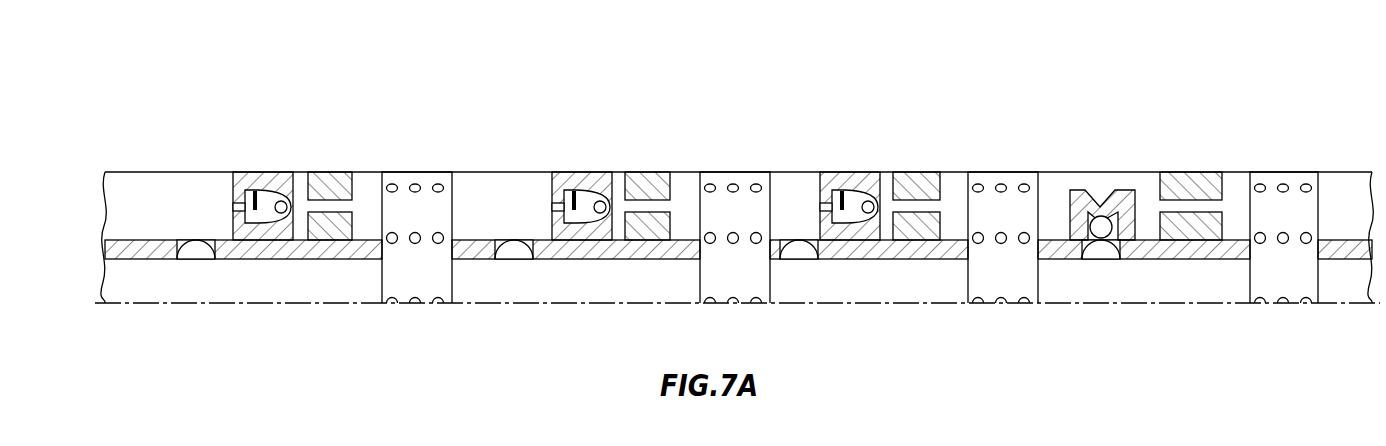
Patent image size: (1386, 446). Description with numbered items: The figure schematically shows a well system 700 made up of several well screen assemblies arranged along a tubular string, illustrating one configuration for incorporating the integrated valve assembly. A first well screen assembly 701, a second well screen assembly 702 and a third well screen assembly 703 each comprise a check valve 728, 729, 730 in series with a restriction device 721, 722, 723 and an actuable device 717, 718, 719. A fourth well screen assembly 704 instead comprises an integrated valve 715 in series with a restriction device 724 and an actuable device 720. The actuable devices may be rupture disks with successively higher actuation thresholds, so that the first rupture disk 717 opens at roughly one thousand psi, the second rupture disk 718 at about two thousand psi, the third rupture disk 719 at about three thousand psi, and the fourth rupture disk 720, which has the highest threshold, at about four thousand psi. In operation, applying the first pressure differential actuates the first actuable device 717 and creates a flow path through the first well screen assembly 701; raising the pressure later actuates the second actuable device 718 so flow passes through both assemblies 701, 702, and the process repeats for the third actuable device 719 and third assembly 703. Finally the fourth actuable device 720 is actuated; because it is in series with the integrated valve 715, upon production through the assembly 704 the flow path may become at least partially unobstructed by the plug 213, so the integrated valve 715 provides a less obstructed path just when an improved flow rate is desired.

The well system 700 is at (156, 128).
The first well screen assembly 701 is at (368, 156).
The second well screen assembly 702 is at (694, 156).
The third well screen assembly 703 is at (961, 157).
The well screen assembly 704 is at (1240, 157).
The integrated valve 715 is at (1077, 180).
The plug 213 is at (1098, 212).
The first actuable device 717 is at (190, 253).
The second actuable device 718 is at (510, 253).
The third actuable device 719 is at (800, 256).
The fourth actuable device 720 is at (1100, 250).
The restriction device 721 is at (322, 172).
The restriction device 722 is at (648, 172).
The restriction device 723 is at (917, 172).
The restriction device 724 is at (1173, 172).
The check valve 728 is at (262, 172).
The check valve 729 is at (588, 172).
The check valve 730 is at (855, 172).